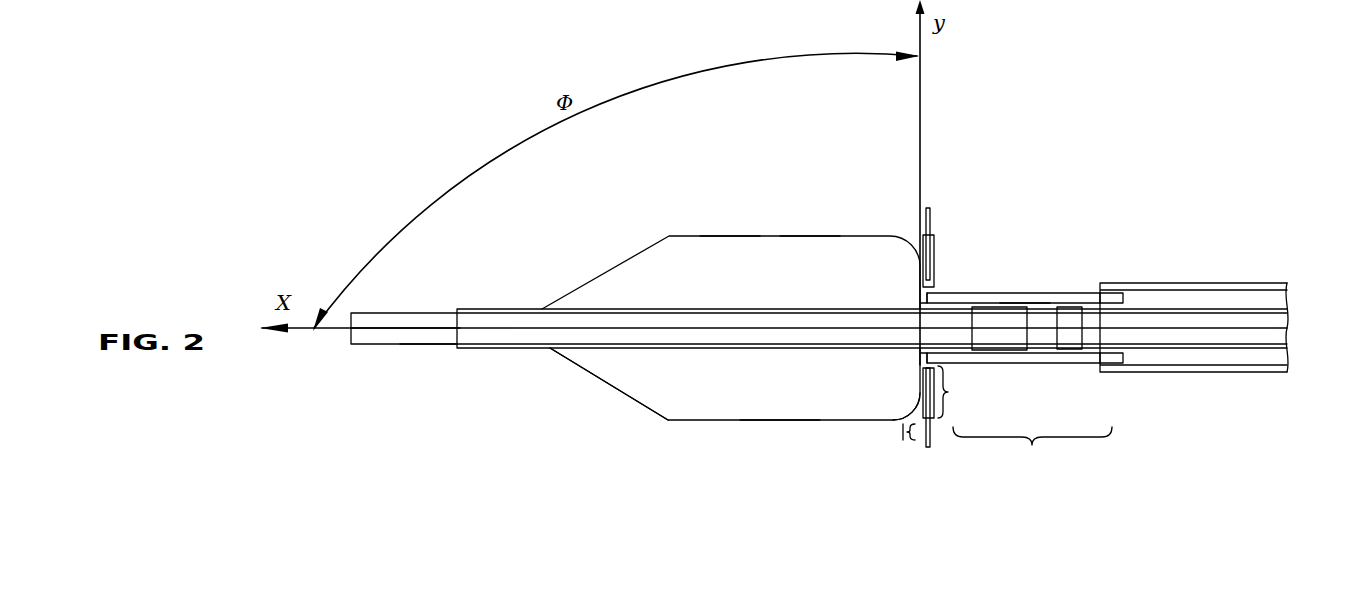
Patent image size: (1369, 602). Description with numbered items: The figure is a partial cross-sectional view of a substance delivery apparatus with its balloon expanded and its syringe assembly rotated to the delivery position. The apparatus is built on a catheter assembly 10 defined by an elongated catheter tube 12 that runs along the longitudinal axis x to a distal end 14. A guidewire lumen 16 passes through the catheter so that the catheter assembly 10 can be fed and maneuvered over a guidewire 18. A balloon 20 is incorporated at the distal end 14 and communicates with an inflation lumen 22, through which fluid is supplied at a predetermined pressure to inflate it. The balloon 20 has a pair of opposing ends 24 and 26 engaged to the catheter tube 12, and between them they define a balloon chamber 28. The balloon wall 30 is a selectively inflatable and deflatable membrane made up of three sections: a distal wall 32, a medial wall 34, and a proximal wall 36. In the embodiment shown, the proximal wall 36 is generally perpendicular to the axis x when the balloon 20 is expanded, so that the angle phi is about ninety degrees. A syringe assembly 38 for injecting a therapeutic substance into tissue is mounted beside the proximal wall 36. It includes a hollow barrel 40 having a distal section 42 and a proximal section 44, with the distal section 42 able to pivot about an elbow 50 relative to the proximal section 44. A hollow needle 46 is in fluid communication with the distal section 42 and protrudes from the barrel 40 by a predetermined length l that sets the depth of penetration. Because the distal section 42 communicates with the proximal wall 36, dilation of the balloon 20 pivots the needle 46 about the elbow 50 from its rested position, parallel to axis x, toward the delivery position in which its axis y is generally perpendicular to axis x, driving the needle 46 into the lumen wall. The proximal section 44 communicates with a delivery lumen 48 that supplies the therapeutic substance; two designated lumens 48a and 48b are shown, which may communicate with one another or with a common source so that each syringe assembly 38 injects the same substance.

The catheter assembly 10 is at (546, 447).
The catheter tube 12 is at (1208, 349).
The distal end 14 is at (413, 312).
The guidewire lumen 16 is at (445, 341).
The guidewire 18 is at (377, 330).
The balloon 20 is at (664, 219).
The inflation lumen 22 is at (1091, 318).
The opposing end 24 is at (478, 309).
The opposing end 26 is at (1028, 342).
The balloon chamber 28 is at (722, 265).
The balloon wall 30 is at (805, 236).
The distal wall 32 is at (617, 389).
The medial wall 34 is at (781, 420).
The proximal wall 36 is at (918, 380).
The syringe assembly 38 is at (981, 241).
The hollow barrel 40 is at (1025, 293).
The distal section 42 is at (941, 403).
The proximal section 44 is at (1032, 455).
The hollow needle 46 is at (928, 208).
The delivery lumen 48 is at (1279, 300).
The delivery lumen 48a is at (1183, 300).
The delivery lumen 48b is at (1262, 358).
The elbow 50 is at (930, 296).